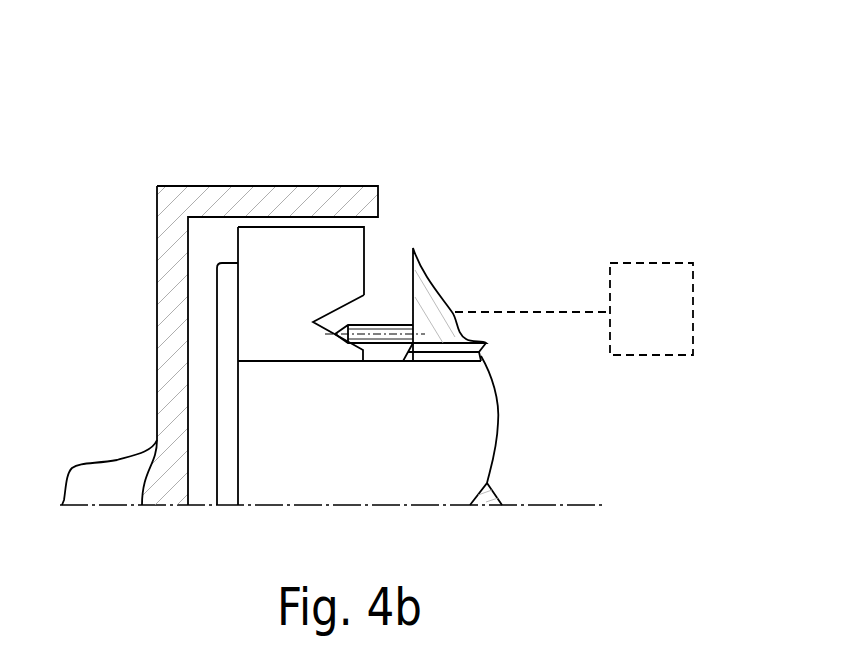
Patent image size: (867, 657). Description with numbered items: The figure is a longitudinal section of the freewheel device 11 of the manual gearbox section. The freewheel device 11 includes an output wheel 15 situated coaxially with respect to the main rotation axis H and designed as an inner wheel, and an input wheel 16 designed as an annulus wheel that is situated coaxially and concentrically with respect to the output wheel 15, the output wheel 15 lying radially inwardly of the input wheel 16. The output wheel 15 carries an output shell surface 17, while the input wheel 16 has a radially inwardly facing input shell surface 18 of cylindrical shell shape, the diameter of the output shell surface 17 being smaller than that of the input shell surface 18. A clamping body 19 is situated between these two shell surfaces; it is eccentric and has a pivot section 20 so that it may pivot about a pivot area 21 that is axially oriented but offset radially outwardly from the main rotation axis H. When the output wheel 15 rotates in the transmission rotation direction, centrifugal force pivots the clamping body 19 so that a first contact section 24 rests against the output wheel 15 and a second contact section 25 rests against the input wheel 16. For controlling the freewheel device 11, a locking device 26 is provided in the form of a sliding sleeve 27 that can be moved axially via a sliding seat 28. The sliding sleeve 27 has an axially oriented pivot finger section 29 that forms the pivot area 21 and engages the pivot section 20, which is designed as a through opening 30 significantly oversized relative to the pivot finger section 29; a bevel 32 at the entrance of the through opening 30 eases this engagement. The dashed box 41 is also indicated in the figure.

The freewheel device 11 is at (468, 72).
The output wheel 15 is at (488, 408).
The input wheel 16 is at (220, 303).
The output shell surface 17 is at (310, 366).
The input shell surface 18 is at (220, 310).
The clamping body 19 is at (331, 231).
The pivot section 20 is at (304, 310).
The pivot area 21 is at (406, 266).
The first contact section 24 is at (298, 363).
The second contact section 25 is at (264, 215).
The locking device 26 is at (470, 303).
The sliding sleeve 27 is at (437, 300).
The sliding seat 28 is at (482, 356).
The pivot finger section 29 is at (383, 325).
The through opening 30 is at (346, 306).
The bevel 32 is at (331, 329).
The control unit 41 is at (574, 309).
The main rotation axis H is at (590, 505).